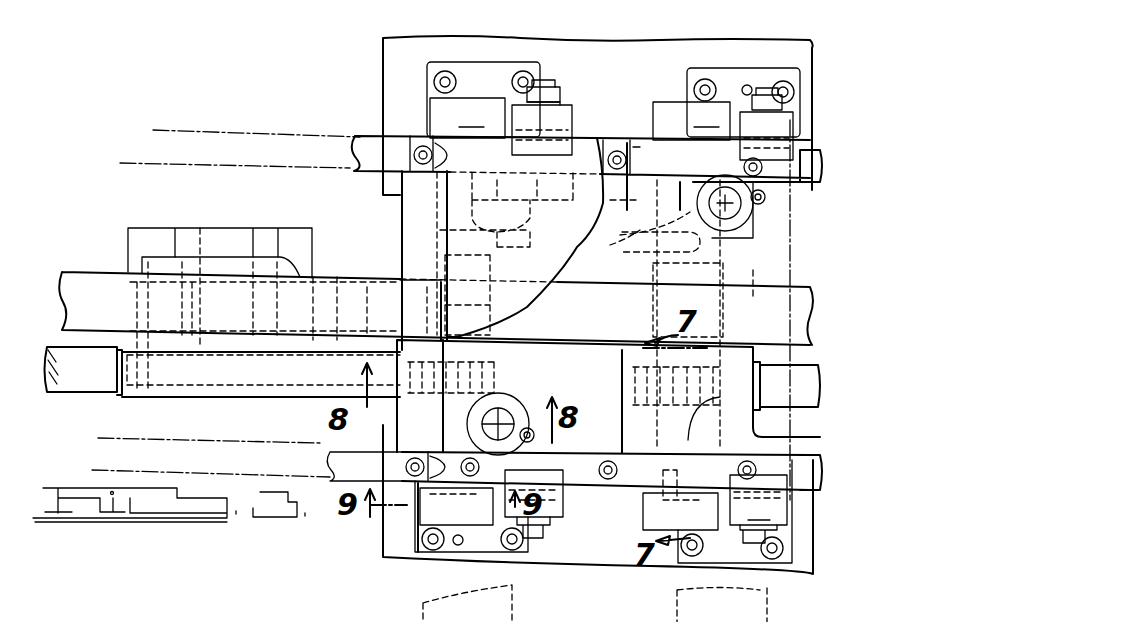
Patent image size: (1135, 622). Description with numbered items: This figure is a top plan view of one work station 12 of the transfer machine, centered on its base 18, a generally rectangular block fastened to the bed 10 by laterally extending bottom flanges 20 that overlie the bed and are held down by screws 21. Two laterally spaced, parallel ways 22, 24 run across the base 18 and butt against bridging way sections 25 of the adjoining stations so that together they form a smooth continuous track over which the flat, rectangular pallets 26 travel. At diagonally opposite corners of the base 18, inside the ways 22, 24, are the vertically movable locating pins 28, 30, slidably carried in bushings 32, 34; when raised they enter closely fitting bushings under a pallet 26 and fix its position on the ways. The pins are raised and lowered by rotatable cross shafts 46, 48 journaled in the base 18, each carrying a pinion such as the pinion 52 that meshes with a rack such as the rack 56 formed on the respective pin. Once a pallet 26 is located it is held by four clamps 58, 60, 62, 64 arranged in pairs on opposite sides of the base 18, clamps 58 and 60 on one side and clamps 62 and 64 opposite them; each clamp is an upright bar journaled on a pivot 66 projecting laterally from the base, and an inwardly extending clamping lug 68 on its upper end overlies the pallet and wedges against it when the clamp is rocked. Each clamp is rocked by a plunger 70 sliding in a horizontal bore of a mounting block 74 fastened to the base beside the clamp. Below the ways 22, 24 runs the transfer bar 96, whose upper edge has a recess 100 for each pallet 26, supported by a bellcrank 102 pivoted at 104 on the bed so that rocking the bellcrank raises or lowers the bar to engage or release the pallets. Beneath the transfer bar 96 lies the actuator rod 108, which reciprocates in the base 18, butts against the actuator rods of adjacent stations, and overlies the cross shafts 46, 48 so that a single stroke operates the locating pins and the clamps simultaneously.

The bed 10 is at (383, 42).
The station 12 is at (346, 105).
The base 18 is at (596, 118).
The bottom flanges 20 is at (498, 68).
The screws 21 is at (434, 82).
The way 22 is at (633, 147).
The way 24 is at (608, 446).
The bridging way sections 25 is at (362, 150).
The pallet 26 is at (560, 273).
The locating pin 28 is at (512, 408).
The locating pin 30 is at (740, 212).
The bushing 32 is at (532, 430).
The bushing 34 is at (738, 240).
The cross shaft 46 is at (532, 246).
The cross shaft 48 is at (642, 239).
The pinion 52 is at (582, 250).
The rack 56 is at (708, 232).
The clamp 58 is at (557, 495).
The clamp 60 is at (758, 500).
The clamp 62 is at (574, 108).
The clamp 64 is at (766, 136).
The pivot 66 is at (546, 88).
The clamping lug 68 is at (542, 154).
The plunger 70 is at (492, 507).
The mounting block 74 is at (634, 530).
The transfer bar 96 is at (82, 283).
The recess 100 is at (441, 282).
The bellcrank 102 is at (208, 265).
The pivot 104 is at (210, 232).
The actuator rod 108 is at (100, 395).